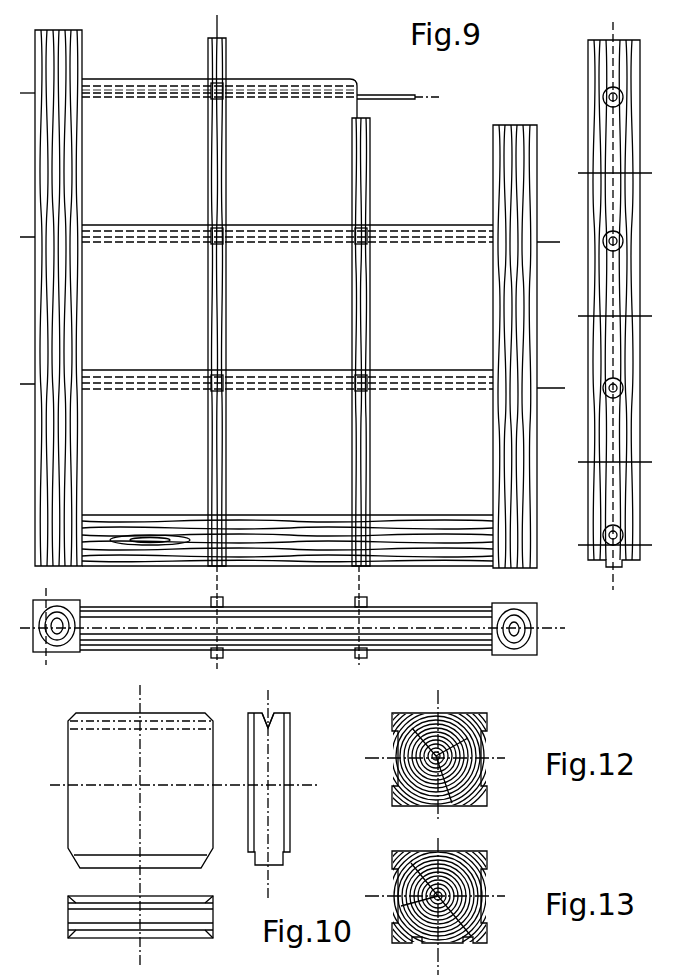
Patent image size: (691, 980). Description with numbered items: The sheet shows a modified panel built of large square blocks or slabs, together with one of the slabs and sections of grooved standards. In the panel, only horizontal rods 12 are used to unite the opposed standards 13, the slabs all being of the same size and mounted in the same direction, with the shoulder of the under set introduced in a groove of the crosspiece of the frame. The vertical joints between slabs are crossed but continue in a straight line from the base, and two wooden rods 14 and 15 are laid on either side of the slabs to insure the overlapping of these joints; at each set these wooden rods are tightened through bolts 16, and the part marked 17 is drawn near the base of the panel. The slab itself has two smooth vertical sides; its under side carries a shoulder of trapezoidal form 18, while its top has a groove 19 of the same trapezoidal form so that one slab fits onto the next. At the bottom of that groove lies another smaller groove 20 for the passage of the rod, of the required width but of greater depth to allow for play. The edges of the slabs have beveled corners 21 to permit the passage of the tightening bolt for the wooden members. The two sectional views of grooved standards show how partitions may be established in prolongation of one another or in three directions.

In FIG. 9, the horizontal rod 12 is at (385, 100).
In FIG. 9, the standard 13 is at (57, 32).
In FIG. 9, the wooden rod 14 is at (220, 604).
In FIG. 9, the wooden rod 15 is at (225, 60).
In FIG. 9, the bolt 16 is at (193, 567).
In FIG. 9, the bottom plank section 17 is at (440, 557).
In FIG. 10, the shoulder of trapezoidal form 18 is at (275, 860).
In FIG. 10, the groove 19 is at (263, 726).
In FIG. 10, the smaller groove 20 is at (305, 715).
In FIG. 10, the beveled corner 21 is at (72, 715).